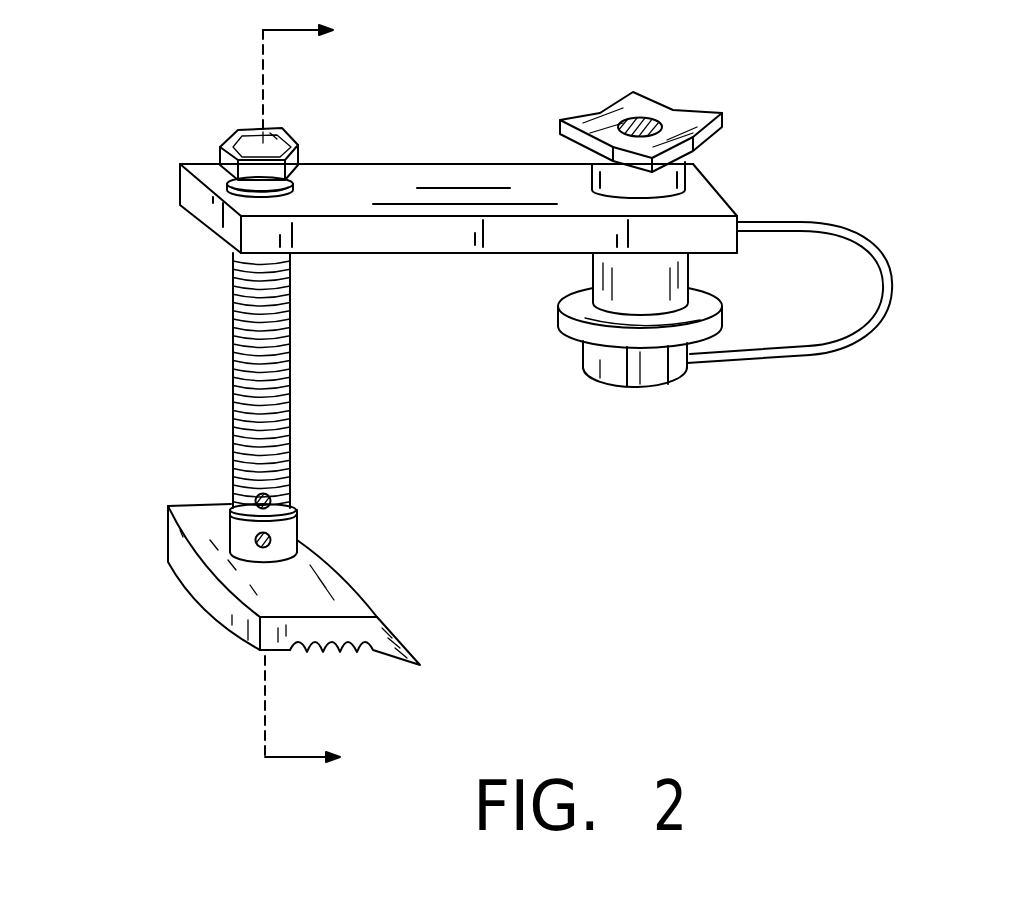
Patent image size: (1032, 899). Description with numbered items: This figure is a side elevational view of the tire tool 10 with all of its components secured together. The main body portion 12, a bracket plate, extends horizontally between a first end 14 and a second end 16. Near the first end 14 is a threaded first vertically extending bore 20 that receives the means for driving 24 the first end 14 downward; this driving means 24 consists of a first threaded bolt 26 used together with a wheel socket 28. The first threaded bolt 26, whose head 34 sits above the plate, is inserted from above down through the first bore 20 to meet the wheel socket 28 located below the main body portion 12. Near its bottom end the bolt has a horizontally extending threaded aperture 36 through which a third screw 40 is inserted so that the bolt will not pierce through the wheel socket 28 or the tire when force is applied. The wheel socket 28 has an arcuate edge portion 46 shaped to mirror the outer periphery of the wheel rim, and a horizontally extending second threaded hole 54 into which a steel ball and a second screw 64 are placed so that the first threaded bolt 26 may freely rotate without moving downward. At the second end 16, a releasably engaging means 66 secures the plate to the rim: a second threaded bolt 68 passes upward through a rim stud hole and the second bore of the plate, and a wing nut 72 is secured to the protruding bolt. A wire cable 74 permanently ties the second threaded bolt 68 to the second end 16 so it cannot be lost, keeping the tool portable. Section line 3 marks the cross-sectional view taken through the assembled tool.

The section line 3— 3 is at (317, 396).
The tire tool 10 is at (499, 356).
The main body portion 12 is at (455, 176).
The first end 14 is at (186, 219).
The second end 16 is at (728, 182).
The first vertically extending bore 20 is at (298, 201).
The means for driving 24 is at (339, 467).
The first threaded bolt 26 is at (280, 364).
The wheel socket 28 is at (300, 592).
The head 34 is at (283, 131).
The horizontally extending threaded aperture 36 is at (259, 528).
The third screw 40 is at (254, 495).
The arcuate edge portion 46 is at (400, 645).
The second threaded hole 54 is at (297, 532).
The second screw 64 is at (252, 542).
The releasably engaging means 66 is at (588, 385).
The second threaded bolt 68 is at (630, 114).
The wing nut 72 is at (661, 114).
The wire cable 74 is at (823, 350).